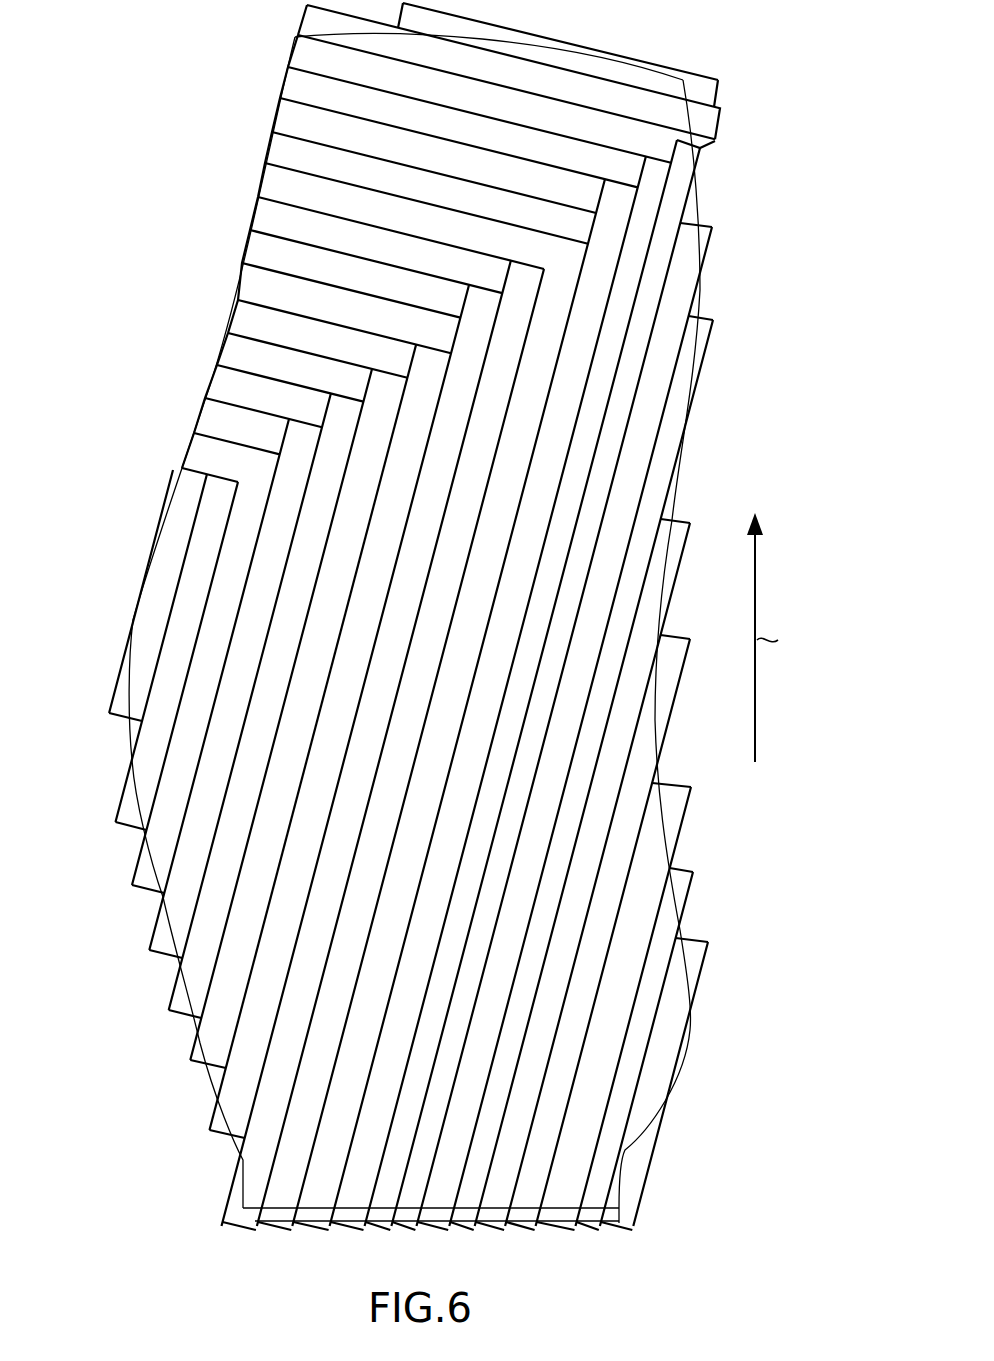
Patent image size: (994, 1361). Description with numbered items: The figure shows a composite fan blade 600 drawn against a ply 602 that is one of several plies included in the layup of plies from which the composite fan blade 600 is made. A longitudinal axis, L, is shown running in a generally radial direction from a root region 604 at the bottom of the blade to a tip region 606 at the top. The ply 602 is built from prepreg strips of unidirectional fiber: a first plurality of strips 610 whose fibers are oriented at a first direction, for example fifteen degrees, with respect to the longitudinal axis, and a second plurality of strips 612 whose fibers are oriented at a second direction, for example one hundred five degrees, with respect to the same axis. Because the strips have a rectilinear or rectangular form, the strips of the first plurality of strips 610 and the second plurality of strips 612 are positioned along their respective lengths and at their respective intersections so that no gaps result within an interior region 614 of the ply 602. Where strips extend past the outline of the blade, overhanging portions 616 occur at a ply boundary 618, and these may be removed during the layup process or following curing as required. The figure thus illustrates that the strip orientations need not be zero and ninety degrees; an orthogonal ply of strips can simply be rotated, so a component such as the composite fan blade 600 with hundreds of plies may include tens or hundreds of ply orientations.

The composite fan blade 600 is at (168, 126).
The ply 602 is at (172, 326).
The root region 604 is at (180, 1180).
The tip region 606 is at (668, 40).
The first plurality of strips 610 is at (722, 878).
The second plurality of strips 612 is at (232, 194).
The interior region 614 is at (268, 655).
The overhanging portions 616 is at (124, 806).
The ply boundary 618 is at (124, 737).